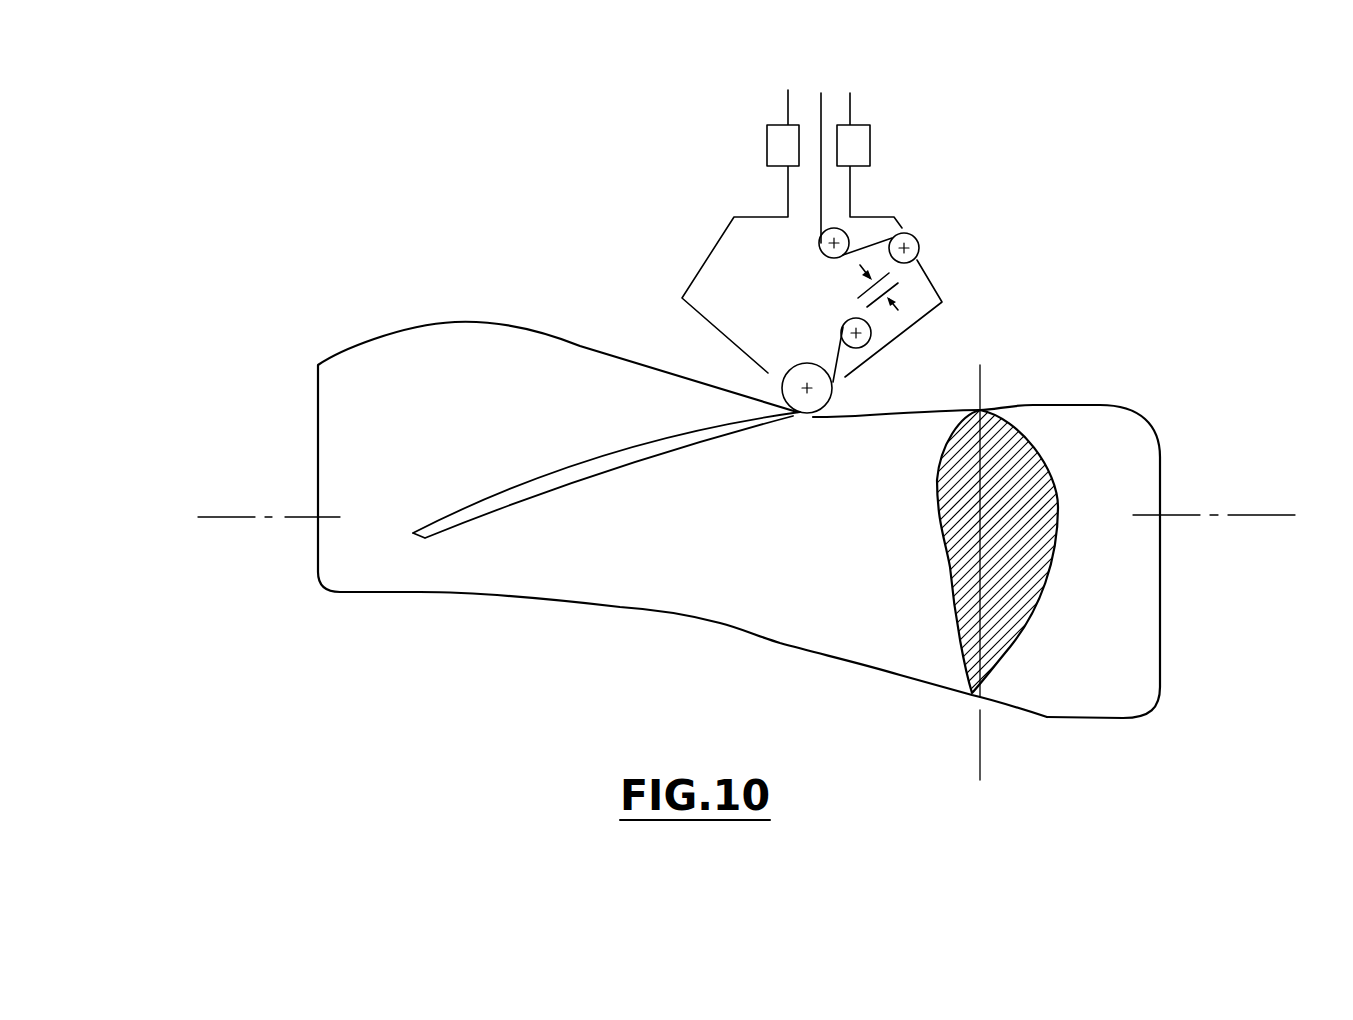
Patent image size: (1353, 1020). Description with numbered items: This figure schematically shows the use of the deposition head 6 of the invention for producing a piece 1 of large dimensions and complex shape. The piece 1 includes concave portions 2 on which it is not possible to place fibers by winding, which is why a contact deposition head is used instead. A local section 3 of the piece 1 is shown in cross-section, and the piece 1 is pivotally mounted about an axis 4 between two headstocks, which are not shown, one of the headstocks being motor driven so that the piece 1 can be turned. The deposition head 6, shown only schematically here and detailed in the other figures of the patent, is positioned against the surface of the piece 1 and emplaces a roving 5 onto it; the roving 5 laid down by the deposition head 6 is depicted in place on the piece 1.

The piece 1 is at (348, 305).
The concave portions 2 is at (1033, 405).
The local section 3 is at (1010, 658).
The axis 4 is at (218, 517).
The roving 5 is at (457, 527).
The deposition head 6 is at (660, 216).